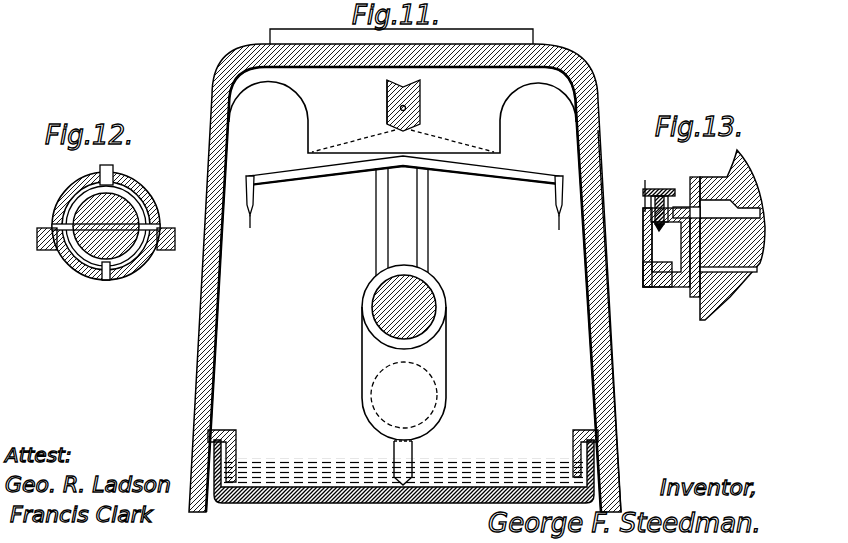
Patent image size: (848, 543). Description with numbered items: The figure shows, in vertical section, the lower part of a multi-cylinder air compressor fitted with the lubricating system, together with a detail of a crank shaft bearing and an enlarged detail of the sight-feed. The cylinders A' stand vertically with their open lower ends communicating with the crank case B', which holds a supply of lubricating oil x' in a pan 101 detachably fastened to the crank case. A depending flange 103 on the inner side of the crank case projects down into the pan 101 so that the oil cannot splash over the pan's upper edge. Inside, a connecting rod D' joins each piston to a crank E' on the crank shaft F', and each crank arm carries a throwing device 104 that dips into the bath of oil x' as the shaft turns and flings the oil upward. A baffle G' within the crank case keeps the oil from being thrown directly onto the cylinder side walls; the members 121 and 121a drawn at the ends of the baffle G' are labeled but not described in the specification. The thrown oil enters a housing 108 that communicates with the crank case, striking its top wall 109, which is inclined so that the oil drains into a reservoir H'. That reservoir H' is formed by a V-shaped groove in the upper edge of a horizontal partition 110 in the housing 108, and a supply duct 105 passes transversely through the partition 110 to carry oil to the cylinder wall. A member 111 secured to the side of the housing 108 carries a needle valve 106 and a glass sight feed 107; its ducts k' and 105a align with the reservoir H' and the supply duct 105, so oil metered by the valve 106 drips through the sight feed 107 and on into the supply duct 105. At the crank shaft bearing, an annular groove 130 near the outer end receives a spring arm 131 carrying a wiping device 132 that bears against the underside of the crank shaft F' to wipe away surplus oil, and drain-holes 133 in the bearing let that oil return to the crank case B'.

In FIG. 11, the pan 101 is at (297, 502).
In FIG. 11, the depending flange 103 is at (573, 440).
In FIG. 11, the throwing device 104 is at (407, 454).
In FIG. 11, the supply duct 105 is at (421, 113).
In FIG. 13, the supply duct 105 is at (732, 286).
In FIG. 13, the duct 105a is at (683, 277).
In FIG. 13, the needle valve 106 is at (658, 190).
In FIG. 13, the glass sight feed 107 is at (648, 230).
In FIG. 11, the housing 108 is at (562, 48).
In FIG. 11, the top wall 109 is at (465, 66).
In FIG. 11, the partition 110 is at (400, 109).
In FIG. 13, the member 111 is at (644, 270).
In FIG. 11, the bracket leg 121 is at (254, 196).
In FIG. 11, the pin 121a is at (394, 235).
In FIG. 12, the annular groove 130 is at (135, 258).
In FIG. 12, the spring arm 131 is at (63, 257).
In FIG. 12, the wiping device 132 is at (103, 273).
In FIG. 12, the drain-holes 133 is at (110, 281).
In FIG. 11, the cylinders A' is at (382, 27).
In FIG. 11, the crank case B' is at (623, 321).
In FIG. 11, the connecting rod D' is at (416, 222).
In FIG. 11, the crank E' is at (378, 373).
In FIG. 11, the crank shaft F' is at (423, 307).
In FIG. 12, the crank shaft F' is at (122, 213).
In FIG. 11, the baffle G' is at (404, 183).
In FIG. 11, the reservoir H' is at (353, 102).
In FIG. 13, the reservoir H' is at (745, 235).
In FIG. 13, the duct k' is at (687, 228).
In FIG. 11, the lubricating oil x' is at (405, 452).